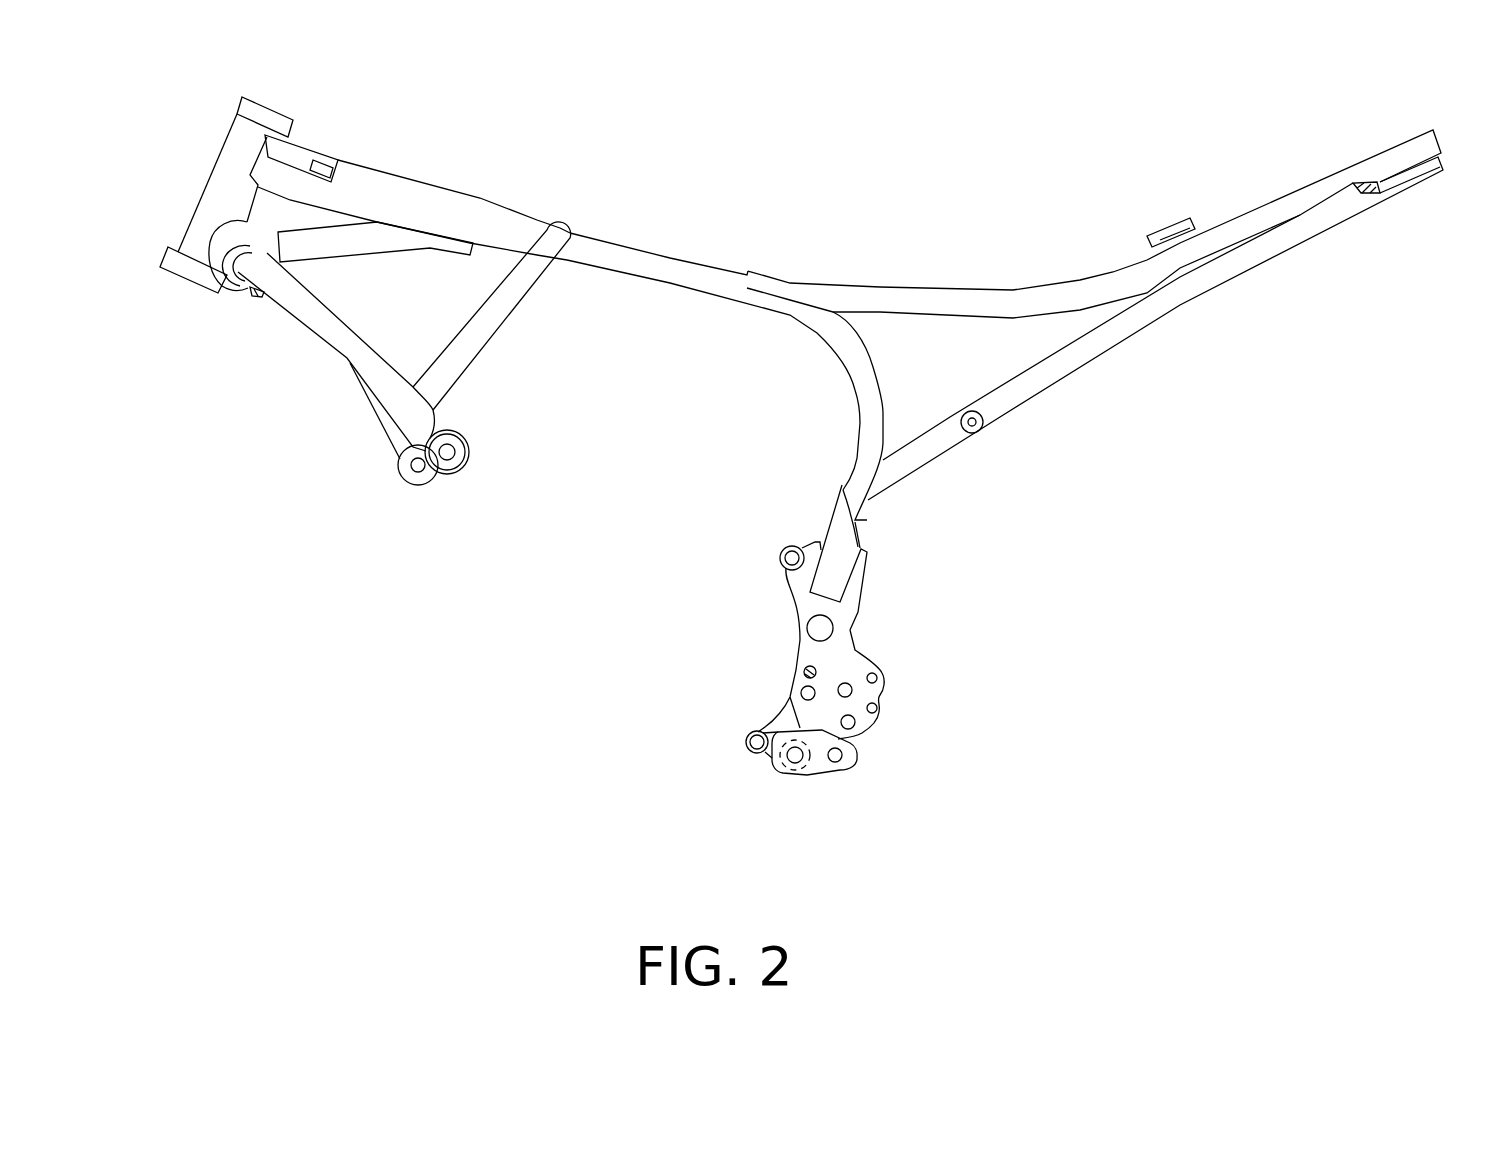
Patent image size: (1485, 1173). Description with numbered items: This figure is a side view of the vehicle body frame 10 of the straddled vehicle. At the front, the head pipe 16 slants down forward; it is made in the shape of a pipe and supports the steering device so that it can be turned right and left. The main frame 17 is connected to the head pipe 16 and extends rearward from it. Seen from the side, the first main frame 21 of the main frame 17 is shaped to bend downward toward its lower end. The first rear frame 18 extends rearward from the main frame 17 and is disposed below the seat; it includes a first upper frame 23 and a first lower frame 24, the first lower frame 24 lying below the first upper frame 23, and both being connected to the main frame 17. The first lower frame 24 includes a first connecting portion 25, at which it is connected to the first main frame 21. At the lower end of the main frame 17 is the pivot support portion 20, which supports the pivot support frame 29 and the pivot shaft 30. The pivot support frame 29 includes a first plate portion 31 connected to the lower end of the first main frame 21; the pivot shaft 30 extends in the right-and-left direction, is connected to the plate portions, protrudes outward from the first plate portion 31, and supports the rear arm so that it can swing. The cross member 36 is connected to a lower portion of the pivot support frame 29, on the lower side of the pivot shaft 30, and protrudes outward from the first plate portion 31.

The vehicle body frame 10 is at (945, 180).
The head pipe 16 is at (235, 162).
The main frame 17 is at (520, 170).
The first rear frame 18 is at (1123, 387).
The pivot support portion 20 is at (920, 683).
The first main frame 21 is at (627, 255).
The first upper frame 23 is at (1103, 285).
The first lower frame 24 is at (1030, 393).
The first connecting portion 25 is at (865, 510).
The pivot support frame 29 is at (895, 725).
The pivot shaft 30 is at (822, 628).
The first plate portion 31 is at (810, 648).
The cross member 36 is at (780, 767).